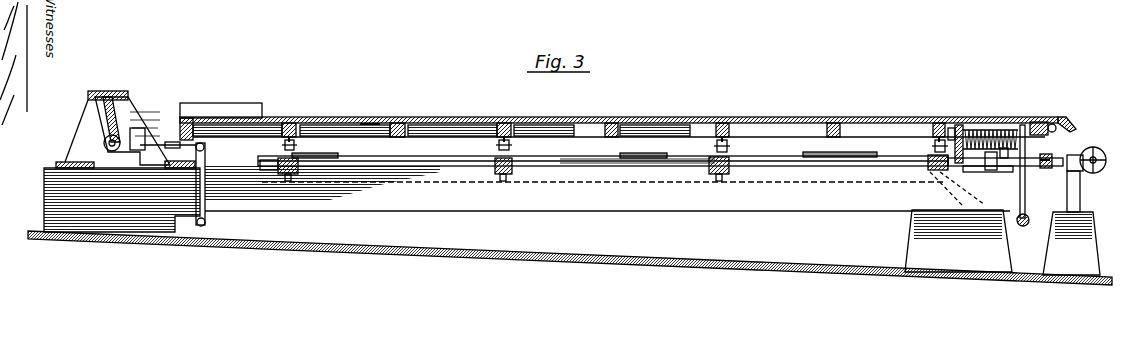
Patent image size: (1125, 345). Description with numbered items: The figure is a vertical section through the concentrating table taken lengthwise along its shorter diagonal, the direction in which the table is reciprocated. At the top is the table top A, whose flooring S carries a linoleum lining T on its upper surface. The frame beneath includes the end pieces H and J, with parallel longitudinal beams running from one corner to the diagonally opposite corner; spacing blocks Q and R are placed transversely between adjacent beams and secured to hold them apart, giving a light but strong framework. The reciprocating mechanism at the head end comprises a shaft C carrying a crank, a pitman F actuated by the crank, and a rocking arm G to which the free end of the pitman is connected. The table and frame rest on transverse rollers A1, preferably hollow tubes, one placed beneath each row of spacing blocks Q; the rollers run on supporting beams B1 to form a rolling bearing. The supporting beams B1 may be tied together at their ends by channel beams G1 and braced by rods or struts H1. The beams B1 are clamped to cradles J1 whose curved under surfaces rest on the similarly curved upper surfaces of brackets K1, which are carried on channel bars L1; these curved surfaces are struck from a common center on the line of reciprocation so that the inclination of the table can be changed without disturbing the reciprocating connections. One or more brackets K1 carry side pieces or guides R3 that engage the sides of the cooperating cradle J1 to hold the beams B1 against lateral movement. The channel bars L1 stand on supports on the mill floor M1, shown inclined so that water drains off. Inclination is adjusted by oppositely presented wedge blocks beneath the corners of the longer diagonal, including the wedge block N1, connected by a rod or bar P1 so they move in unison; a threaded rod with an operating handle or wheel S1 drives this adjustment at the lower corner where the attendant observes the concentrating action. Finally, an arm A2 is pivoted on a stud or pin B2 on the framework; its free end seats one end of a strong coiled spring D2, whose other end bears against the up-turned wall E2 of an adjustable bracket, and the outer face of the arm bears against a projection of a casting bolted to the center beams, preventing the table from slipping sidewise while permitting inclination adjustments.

The shaft C is at (104, 95).
The pitman F is at (100, 116).
The rocking arm G is at (208, 164).
The end piece H is at (171, 133).
The table top A is at (628, 114).
The transverse roller A1 is at (300, 140).
The arm A2 is at (1005, 176).
The spacing block Q is at (297, 128).
The spacing block R is at (401, 126).
The side piece or guide R3 is at (338, 222).
The linoleum lining T is at (377, 123).
The supporting beam B1 is at (290, 150).
The stud or pin B2 is at (1024, 226).
The rod or strut H1 is at (328, 157).
The end piece J is at (1038, 122).
The cradle J1 is at (282, 175).
The bracket K1 is at (292, 180).
The flooring S is at (450, 125).
The operating handle or wheel S1 is at (1087, 167).
The channel beam G1 is at (455, 162).
The channel bar L1 is at (637, 204).
The mill floor M1 is at (688, 268).
The rod or bar P1 is at (692, 167).
The wedge block N1 is at (918, 170).
The up-turned end or wall E2 is at (962, 124).
The coiled spring D2 is at (992, 130).